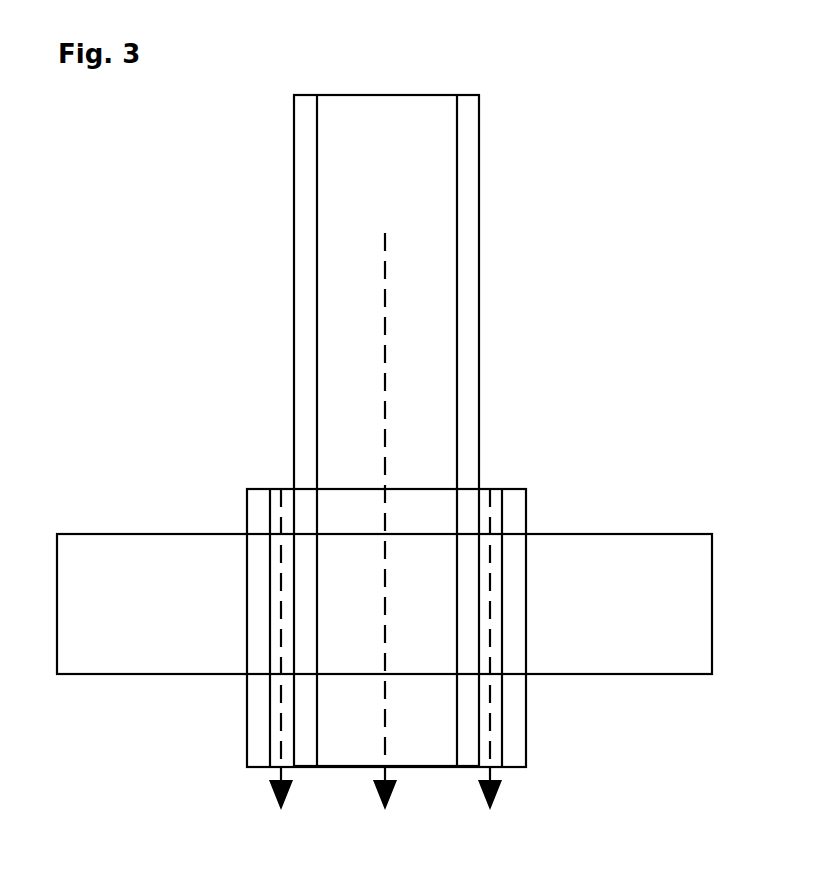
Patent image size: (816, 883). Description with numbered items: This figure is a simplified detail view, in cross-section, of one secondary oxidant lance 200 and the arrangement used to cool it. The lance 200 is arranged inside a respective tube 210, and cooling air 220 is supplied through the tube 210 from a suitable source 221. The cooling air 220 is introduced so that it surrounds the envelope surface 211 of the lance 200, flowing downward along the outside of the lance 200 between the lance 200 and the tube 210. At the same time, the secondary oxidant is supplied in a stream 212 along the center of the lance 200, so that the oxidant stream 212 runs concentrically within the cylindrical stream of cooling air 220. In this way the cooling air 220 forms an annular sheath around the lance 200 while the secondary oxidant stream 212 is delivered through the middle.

The lance 200 is at (305, 125).
The envelope surface 211 is at (293, 270).
The tube 210 is at (250, 693).
The source 221 is at (481, 487).
The stream of secondary oxidant 212 is at (384, 537).
The cooling air 220 is at (372, 665).